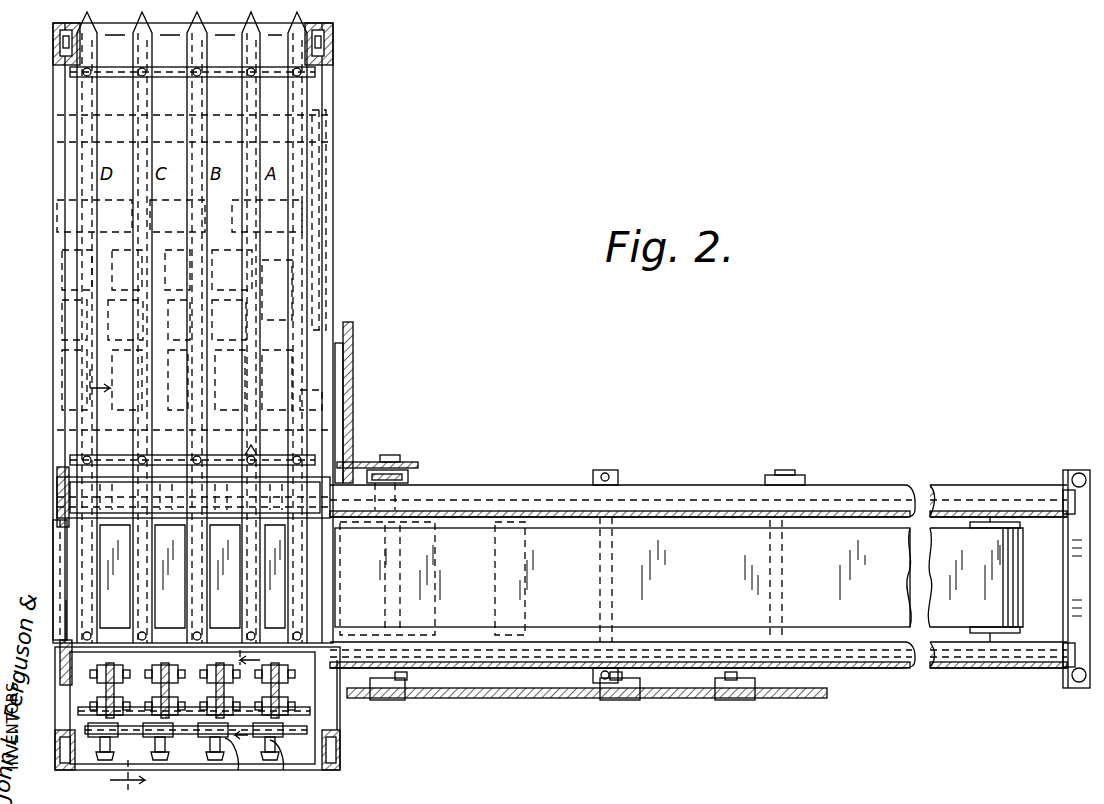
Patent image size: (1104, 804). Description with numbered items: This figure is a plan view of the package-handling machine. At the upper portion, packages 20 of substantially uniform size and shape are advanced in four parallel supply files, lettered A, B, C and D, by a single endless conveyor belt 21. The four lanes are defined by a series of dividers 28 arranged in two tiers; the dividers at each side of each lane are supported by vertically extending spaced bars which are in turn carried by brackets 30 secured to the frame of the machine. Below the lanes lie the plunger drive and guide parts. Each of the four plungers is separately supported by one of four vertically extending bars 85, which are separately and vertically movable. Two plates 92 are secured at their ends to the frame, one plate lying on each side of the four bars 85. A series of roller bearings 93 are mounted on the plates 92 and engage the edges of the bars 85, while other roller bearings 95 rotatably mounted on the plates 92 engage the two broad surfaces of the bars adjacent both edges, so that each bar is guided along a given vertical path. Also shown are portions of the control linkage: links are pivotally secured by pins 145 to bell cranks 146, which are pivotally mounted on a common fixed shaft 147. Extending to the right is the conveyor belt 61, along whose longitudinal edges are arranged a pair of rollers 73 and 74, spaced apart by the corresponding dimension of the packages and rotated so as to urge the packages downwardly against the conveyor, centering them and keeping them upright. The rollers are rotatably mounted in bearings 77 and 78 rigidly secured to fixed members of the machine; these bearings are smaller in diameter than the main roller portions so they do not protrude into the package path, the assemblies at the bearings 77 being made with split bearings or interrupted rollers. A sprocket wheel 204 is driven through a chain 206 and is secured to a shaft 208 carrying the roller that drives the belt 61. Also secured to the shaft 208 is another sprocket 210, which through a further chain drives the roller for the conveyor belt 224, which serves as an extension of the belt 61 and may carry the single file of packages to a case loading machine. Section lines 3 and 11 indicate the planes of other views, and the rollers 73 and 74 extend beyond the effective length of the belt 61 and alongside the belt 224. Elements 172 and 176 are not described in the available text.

The section line 3- 3 is at (124, 578).
The section line 11- 11 is at (254, 698).
The packages 20 is at (100, 420).
The conveyor belt 21 is at (100, 158).
The dividers 28 is at (98, 224).
The brackets 30 is at (110, 78).
The conveyor belt 61 is at (478, 568).
The roller 73 is at (490, 486).
The roller 74 is at (480, 670).
The bearings 77 is at (600, 470).
The bearings 78 is at (1066, 472).
The vertically extending bars 85 is at (110, 705).
The plates 92 is at (290, 700).
The roller bearings 93 is at (165, 668).
The roller bearings 95 is at (112, 668).
The pins 145 is at (282, 748).
The bell cranks 146 is at (228, 748).
The fixed shaft 147 is at (190, 735).
The lever 172 is at (66, 672).
The cross head 176 is at (62, 488).
The sprocket wheel 204 is at (410, 470).
The chain 206 is at (355, 462).
The shaft 208 is at (408, 478).
The sprocket 210 is at (368, 698).
The conveyor belt 224 is at (750, 568).